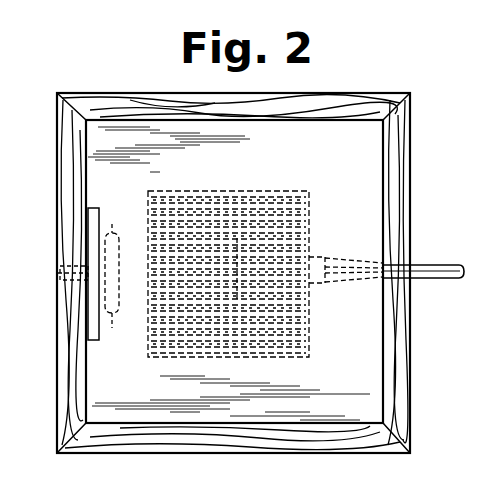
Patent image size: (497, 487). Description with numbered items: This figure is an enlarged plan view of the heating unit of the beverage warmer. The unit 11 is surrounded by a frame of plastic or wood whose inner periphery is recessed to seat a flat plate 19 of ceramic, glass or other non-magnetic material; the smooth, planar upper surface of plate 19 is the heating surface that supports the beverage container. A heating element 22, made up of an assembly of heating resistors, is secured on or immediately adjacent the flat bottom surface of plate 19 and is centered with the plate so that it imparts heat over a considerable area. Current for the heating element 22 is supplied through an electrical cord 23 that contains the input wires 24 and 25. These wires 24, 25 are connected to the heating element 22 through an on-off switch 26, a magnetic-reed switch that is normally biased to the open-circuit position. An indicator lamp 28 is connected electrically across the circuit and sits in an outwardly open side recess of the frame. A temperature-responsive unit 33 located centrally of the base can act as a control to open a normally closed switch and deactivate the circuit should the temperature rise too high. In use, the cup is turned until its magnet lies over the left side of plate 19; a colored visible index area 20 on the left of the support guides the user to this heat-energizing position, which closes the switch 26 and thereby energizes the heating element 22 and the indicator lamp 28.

The wooden frame 11 is at (337, 82).
The flat plate 19 is at (336, 386).
The visible index area 20 is at (88, 240).
The heating element 22 is at (237, 191).
The electrical cord 23 is at (441, 278).
The input wire 24 is at (368, 262).
The input wire 25 is at (368, 282).
The on-off switch 26 is at (119, 246).
The indicator lamp 28 is at (58, 274).
The temperature-responsive unit 33 is at (237, 262).